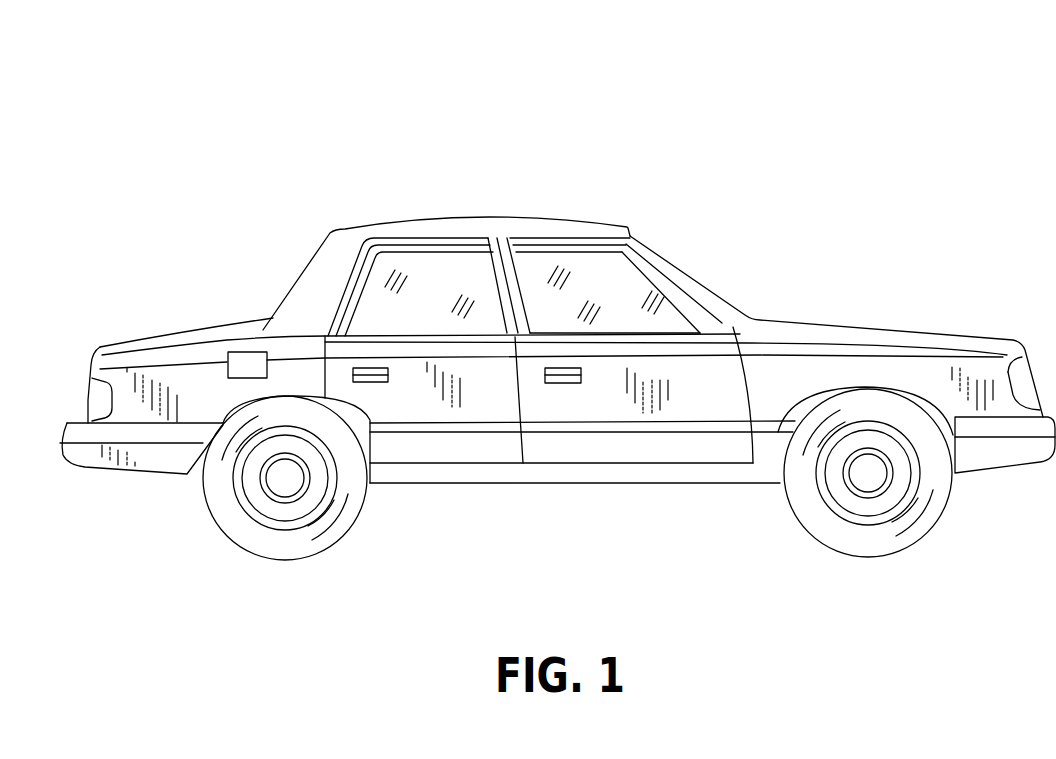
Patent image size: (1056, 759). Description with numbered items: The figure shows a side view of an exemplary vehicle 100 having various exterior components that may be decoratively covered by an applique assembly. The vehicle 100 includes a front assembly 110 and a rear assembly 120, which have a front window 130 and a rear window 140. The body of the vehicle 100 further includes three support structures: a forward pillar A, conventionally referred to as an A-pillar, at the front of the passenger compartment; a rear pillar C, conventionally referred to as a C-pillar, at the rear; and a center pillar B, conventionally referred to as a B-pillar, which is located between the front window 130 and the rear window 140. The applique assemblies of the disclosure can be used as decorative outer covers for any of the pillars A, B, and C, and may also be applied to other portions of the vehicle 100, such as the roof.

The vehicle 100 is at (917, 122).
The front assembly 110 is at (682, 297).
The rear assembly 120 is at (411, 252).
The front window 130 is at (572, 262).
The rear window 140 is at (438, 270).
The forward pillar A is at (670, 270).
The center pillar B is at (497, 240).
The rear pillar C is at (327, 278).